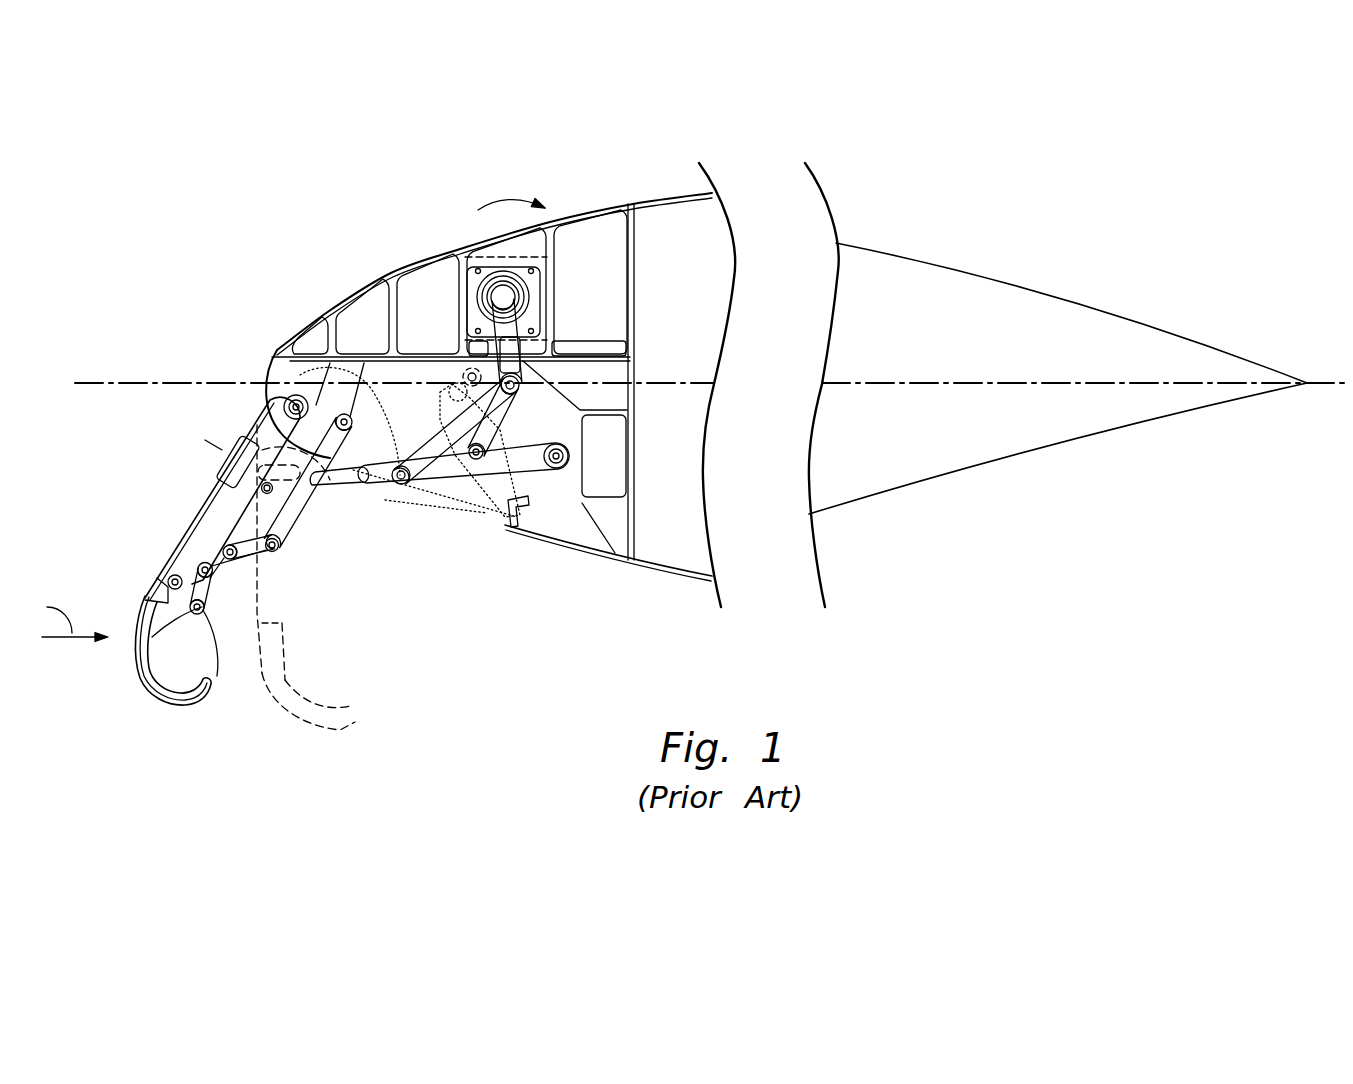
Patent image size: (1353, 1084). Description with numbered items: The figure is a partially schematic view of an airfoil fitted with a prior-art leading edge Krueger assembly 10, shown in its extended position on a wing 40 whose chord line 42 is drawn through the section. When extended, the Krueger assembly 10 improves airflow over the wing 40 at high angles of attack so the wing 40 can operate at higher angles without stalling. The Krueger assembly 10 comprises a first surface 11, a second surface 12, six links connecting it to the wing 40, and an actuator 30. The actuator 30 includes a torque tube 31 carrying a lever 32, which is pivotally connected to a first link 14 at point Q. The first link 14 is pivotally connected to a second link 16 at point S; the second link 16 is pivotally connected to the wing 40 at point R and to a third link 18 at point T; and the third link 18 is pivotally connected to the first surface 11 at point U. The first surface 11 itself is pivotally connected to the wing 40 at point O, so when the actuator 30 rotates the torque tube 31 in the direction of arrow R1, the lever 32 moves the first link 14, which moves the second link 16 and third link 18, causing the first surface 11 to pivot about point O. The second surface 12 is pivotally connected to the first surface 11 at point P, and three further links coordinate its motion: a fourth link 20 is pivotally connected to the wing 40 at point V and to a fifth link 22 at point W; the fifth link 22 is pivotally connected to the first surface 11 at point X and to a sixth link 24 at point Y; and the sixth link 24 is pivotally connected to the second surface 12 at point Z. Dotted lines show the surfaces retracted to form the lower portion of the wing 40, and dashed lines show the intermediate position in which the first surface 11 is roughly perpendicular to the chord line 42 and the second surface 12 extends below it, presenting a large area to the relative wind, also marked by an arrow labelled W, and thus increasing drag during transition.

The Krueger assembly 10 is at (148, 343).
The first surface 11 is at (235, 462).
The second surface 12 is at (143, 673).
The first link 14 is at (528, 500).
The second link 16 is at (533, 462).
The third link 18 is at (350, 488).
The fourth link 20 is at (293, 513).
The fifth link 22 is at (272, 500).
The sixth link 24 is at (175, 568).
The actuator 30 is at (500, 283).
The torque tube 31 is at (520, 297).
The lever 32 is at (547, 350).
The wing 40 is at (1008, 163).
The chord line 42 is at (893, 383).
The arrow R1 is at (513, 203).
The point O is at (300, 400).
The point P is at (167, 580).
The point Q is at (517, 392).
The point R is at (568, 457).
The point S is at (474, 463).
The point T is at (401, 490).
The point U is at (266, 485).
The point V is at (352, 423).
The point W is at (274, 552).
The point X is at (268, 560).
The point Y is at (226, 572).
The point Z is at (205, 613).